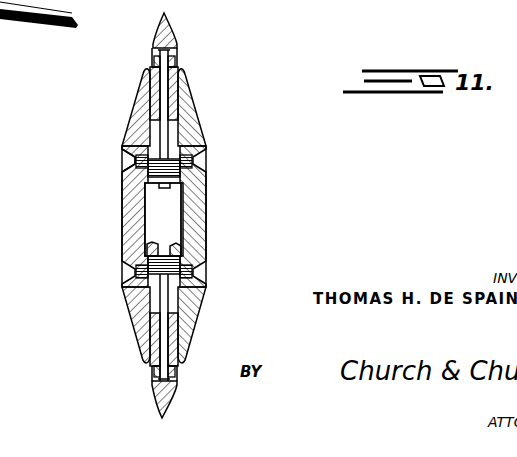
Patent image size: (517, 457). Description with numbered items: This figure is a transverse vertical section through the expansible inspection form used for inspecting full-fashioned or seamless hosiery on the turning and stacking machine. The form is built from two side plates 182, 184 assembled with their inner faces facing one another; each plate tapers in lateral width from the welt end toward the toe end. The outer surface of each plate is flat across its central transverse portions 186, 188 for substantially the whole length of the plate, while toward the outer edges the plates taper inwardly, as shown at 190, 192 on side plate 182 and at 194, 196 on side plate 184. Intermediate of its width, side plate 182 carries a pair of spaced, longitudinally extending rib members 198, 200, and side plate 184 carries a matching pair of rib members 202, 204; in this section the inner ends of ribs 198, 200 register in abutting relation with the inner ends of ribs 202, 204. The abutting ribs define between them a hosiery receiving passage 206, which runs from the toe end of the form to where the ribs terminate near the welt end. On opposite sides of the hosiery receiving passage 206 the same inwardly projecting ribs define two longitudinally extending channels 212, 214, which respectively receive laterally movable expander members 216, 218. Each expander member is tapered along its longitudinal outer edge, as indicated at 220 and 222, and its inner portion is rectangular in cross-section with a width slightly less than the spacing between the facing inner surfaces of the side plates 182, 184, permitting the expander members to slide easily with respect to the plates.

The side plate 182 is at (215, 210).
The side plate 184 is at (114, 210).
The central transverse portion 186 is at (207, 232).
The central transverse portion 188 is at (124, 232).
The inwardly tapering edge portion 190 is at (200, 128).
The inwardly tapering edge portion 192 is at (198, 330).
The inwardly tapering edge portion 194 is at (130, 108).
The inwardly tapering edge portion 196 is at (127, 330).
The rib member 198 is at (172, 184).
The rib member 200 is at (183, 247).
The rib member 202 is at (124, 195).
The rib member 204 is at (148, 243).
The hosiery receiving passage 206 is at (178, 224).
The longitudinally extending channel 212 is at (172, 132).
The longitudinally extending channel 214 is at (172, 305).
The expander member 216 is at (137, 45).
The expander member 218 is at (137, 398).
The tapered outer edge 220 is at (168, 33).
The tapered outer edge 222 is at (170, 400).